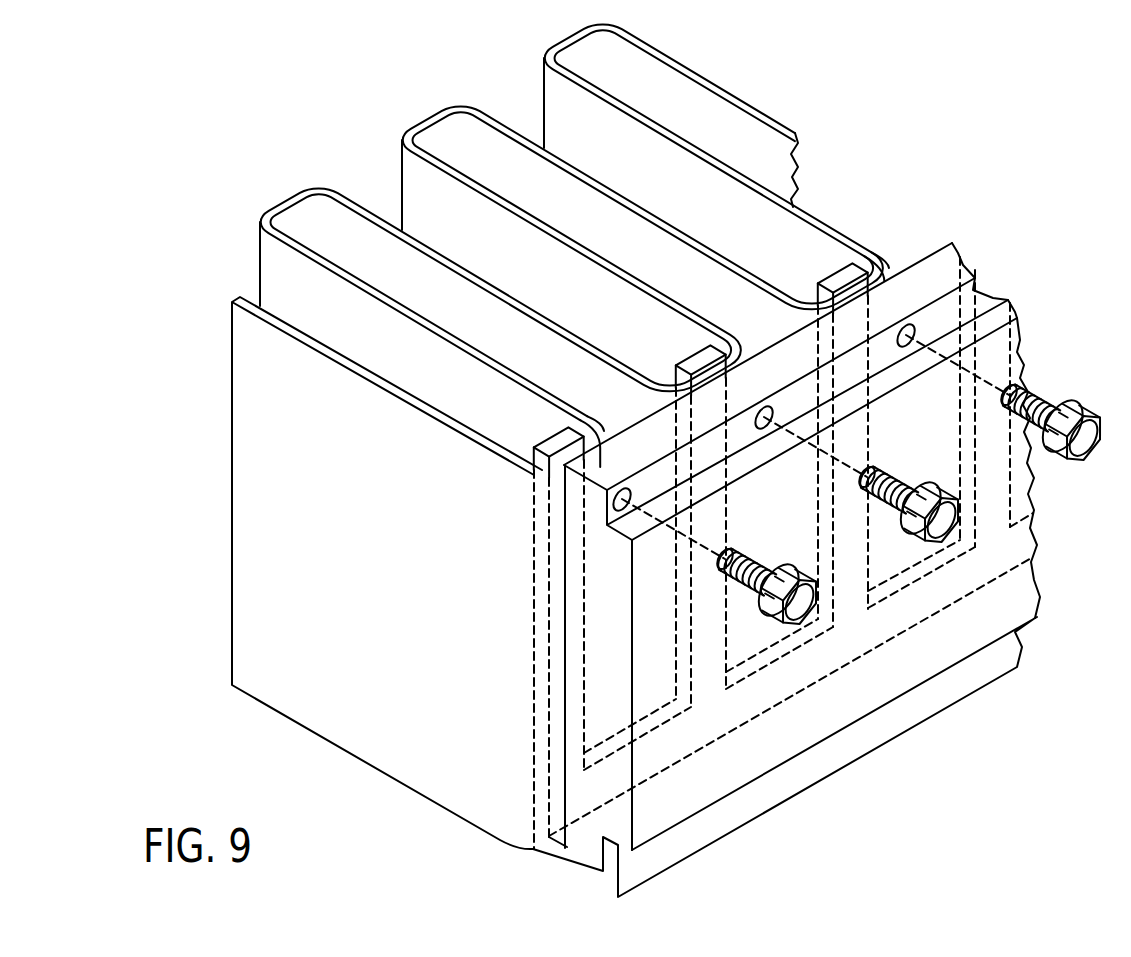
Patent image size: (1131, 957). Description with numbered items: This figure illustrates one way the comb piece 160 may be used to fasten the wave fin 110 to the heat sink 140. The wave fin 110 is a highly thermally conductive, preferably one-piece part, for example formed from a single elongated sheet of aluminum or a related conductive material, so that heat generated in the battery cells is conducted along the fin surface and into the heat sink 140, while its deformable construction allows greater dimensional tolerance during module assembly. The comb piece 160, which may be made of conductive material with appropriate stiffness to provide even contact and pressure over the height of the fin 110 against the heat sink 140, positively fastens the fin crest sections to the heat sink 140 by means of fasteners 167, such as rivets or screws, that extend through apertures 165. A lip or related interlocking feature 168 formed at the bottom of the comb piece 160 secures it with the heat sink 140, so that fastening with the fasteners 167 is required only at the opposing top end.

The wave fin 110 is at (402, 163).
The heat sink 140 is at (935, 262).
The comb piece 160 is at (532, 552).
The aperture 165 is at (570, 452).
The fastener 167 is at (787, 576).
The interlocking feature 168 is at (815, 770).